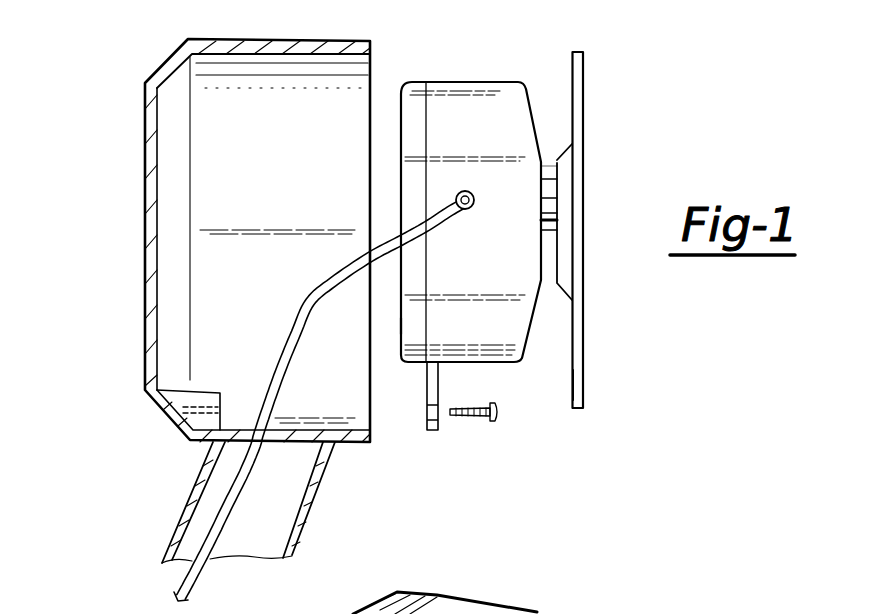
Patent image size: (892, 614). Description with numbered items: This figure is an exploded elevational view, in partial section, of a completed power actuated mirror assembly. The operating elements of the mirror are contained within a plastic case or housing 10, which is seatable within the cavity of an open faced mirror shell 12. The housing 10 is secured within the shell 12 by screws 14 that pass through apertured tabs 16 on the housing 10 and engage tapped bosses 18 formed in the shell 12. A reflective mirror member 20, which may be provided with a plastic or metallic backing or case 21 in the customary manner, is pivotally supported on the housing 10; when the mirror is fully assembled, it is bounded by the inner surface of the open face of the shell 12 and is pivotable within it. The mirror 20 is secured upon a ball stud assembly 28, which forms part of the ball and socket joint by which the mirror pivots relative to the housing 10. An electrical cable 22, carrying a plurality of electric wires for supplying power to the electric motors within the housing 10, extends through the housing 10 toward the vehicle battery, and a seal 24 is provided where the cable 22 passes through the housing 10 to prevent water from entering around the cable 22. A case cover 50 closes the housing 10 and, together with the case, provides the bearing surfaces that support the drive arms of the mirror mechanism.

The housing 10 is at (483, 82).
The mirror shell 12 is at (145, 131).
The screws 14 is at (498, 413).
The apertured tabs 16 is at (430, 432).
The tapped bosses 18 is at (222, 400).
The reflective mirror member 20 is at (584, 118).
The mirror case 21 is at (573, 382).
The electrical cable 22 is at (199, 579).
The seal 24 is at (466, 211).
The ball stud assembly 28 is at (548, 169).
The case cover 50 is at (398, 326).